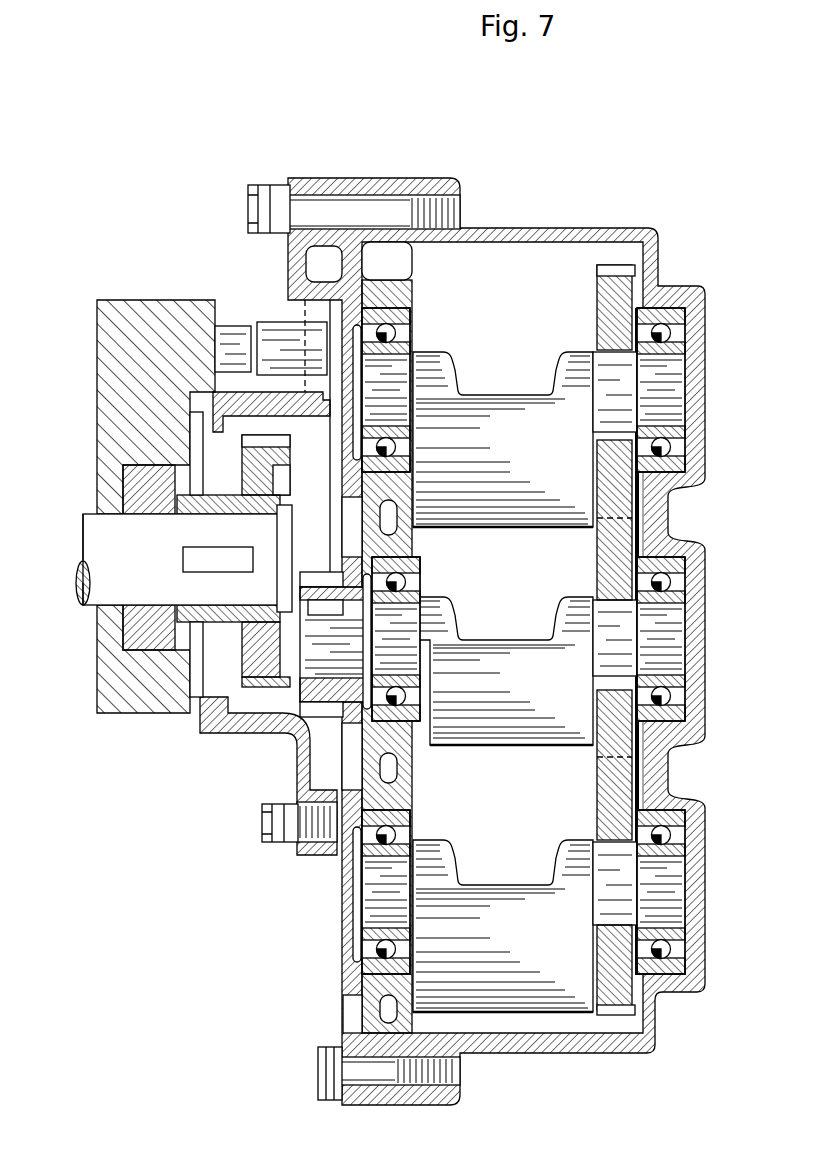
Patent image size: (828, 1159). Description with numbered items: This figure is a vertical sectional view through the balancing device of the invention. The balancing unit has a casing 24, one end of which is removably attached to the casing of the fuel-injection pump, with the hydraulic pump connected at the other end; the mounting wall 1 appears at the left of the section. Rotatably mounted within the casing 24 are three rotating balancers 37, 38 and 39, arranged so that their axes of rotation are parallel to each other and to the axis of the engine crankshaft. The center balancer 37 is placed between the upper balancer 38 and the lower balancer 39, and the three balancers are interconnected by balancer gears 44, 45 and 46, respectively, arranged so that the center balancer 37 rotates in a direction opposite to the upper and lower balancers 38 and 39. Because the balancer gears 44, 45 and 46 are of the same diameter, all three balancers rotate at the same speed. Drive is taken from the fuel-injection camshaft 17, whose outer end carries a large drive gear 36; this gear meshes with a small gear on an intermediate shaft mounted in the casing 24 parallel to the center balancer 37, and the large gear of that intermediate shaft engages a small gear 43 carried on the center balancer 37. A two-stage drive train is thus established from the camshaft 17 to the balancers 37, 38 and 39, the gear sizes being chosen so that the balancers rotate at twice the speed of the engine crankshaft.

The wall 1 is at (186, 320).
The fuel-injection camshaft 17 is at (85, 532).
The casing 24 is at (523, 228).
The large drive gear 36 is at (228, 473).
The center balancer 37 is at (668, 640).
The upper balancer 38 is at (672, 396).
The lower balancer 39 is at (672, 885).
The small gear 43 is at (285, 738).
The balancer gear 44 is at (615, 533).
The balancer gear 45 is at (605, 290).
The balancer gear 46 is at (630, 1000).